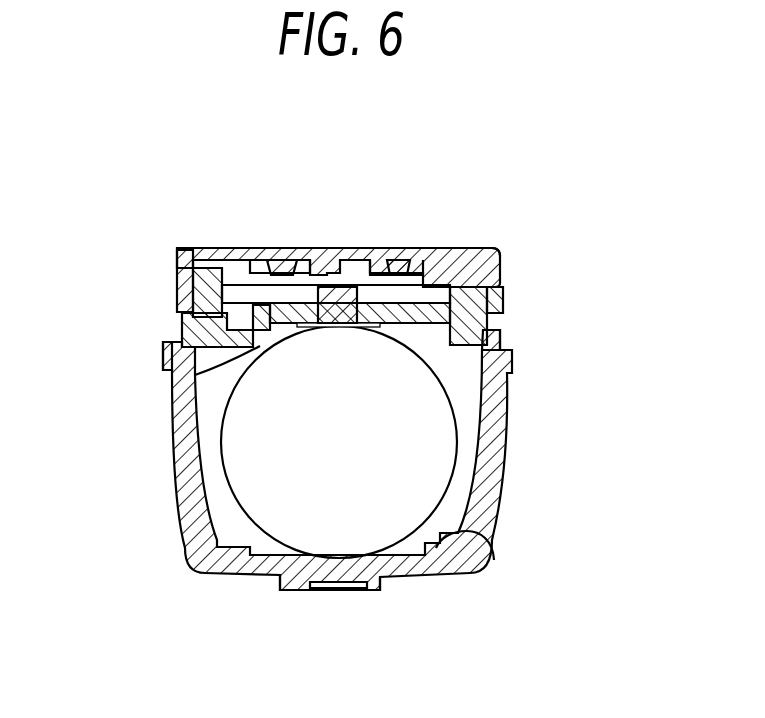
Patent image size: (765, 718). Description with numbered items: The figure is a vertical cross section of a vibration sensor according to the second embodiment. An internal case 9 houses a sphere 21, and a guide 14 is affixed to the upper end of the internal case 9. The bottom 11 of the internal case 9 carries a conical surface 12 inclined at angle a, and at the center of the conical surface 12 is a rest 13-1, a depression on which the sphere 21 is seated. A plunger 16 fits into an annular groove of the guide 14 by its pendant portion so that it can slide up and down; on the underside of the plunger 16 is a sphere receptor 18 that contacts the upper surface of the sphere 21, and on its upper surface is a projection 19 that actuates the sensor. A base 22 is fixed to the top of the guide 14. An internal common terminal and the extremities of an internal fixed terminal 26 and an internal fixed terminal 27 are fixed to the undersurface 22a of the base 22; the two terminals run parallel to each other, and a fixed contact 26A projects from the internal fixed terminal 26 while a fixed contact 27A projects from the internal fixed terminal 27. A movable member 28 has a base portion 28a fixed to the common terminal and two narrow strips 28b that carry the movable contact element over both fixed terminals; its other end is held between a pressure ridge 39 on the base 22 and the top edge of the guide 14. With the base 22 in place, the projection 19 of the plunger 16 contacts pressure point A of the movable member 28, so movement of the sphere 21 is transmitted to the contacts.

The internal case 9 is at (180, 470).
The bottom 11 is at (494, 560).
The conical surface 12 is at (405, 578).
The rest 13-1 is at (311, 592).
The guide 14 is at (498, 327).
The plunger 16 is at (177, 393).
The sphere receptor 18 is at (420, 340).
The projection 19 is at (320, 305).
The sphere 21 is at (265, 496).
The base 22 is at (500, 252).
The undersurface 22a is at (460, 248).
The internal fixed terminal 26 is at (412, 262).
The fixed contact 26A is at (362, 262).
The internal fixed terminal 27 is at (270, 262).
The fixed contact 27A is at (288, 265).
The movable member 28 is at (318, 286).
The base portion 28a is at (180, 253).
The narrow strips 28b is at (507, 287).
The pressure ridge 39 is at (490, 248).